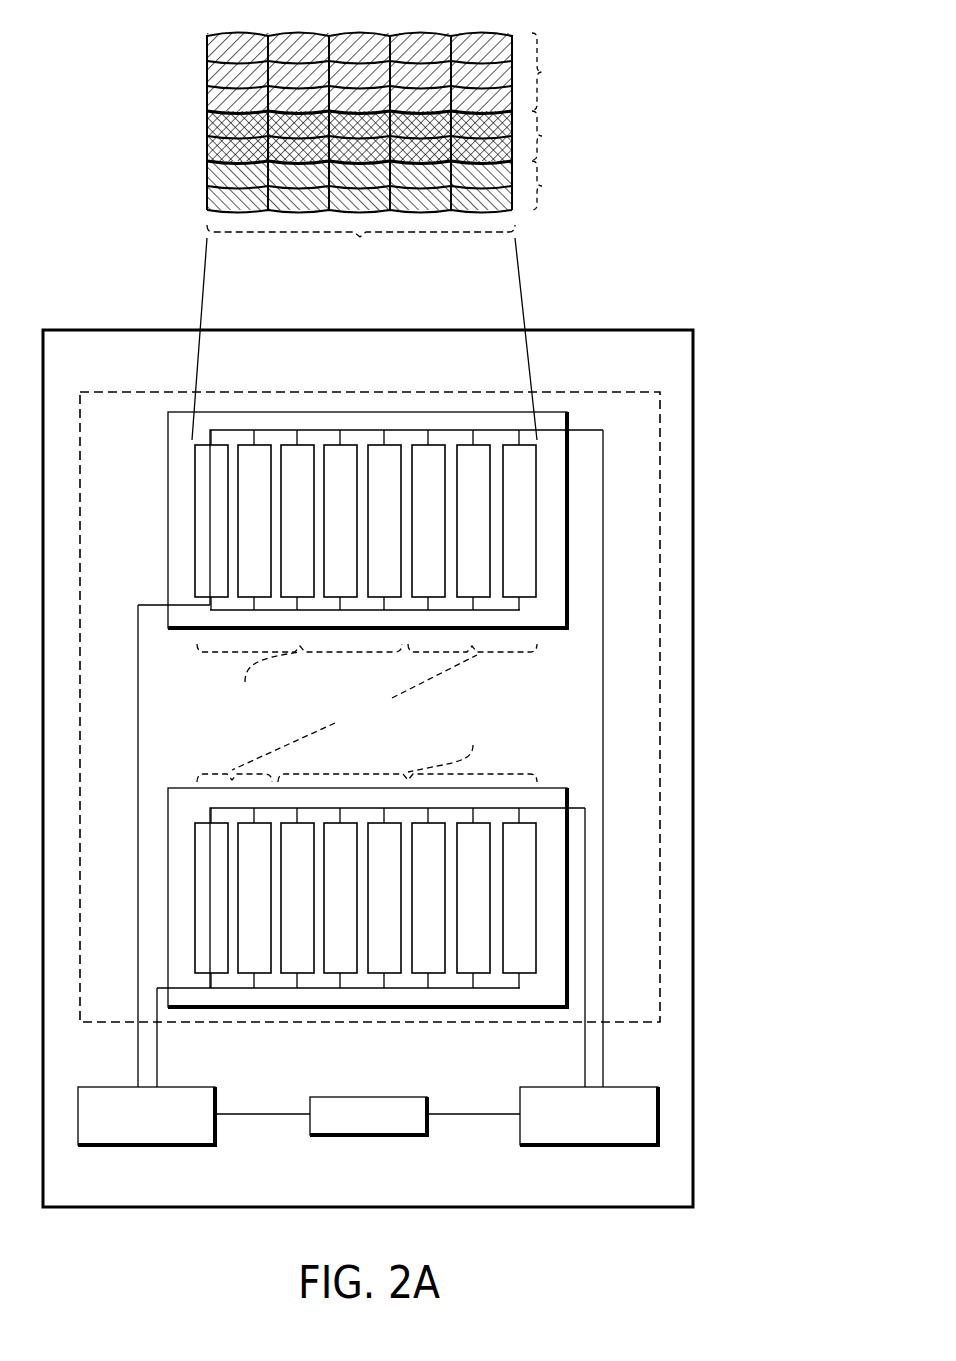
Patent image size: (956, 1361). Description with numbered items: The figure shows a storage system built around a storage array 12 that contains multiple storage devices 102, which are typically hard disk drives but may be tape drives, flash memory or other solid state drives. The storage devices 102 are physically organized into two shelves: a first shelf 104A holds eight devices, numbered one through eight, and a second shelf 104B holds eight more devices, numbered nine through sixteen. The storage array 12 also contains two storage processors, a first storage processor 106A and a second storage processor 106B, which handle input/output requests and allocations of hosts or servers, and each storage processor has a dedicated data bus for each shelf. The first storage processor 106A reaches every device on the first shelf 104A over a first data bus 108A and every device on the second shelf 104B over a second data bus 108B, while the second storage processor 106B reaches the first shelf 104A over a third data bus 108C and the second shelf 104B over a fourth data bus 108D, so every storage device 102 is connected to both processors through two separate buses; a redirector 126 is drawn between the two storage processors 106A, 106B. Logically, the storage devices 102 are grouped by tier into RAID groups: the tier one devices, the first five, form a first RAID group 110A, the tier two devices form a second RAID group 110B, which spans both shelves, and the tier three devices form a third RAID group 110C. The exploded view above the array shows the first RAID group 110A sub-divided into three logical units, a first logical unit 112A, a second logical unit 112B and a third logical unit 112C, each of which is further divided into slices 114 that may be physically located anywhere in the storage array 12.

The storage array 12 is at (82, 330).
The storage devices 102 is at (130, 392).
The Shelf1 104A is at (168, 463).
The Shelf2 104B is at (168, 840).
The storage processor SP1 106A is at (147, 1148).
The storage processor SP2 106B is at (592, 1148).
The first data bus 108A is at (138, 1045).
The second data bus 108B is at (158, 1047).
The third data bus 108C is at (584, 1045).
The fourth data bus 108D is at (604, 1047).
The RAID group RG1 110A is at (197, 656).
The RAID group RG2 110B is at (537, 652).
The RAID group RG3 110C is at (537, 774).
The logical unit LU1 112A is at (206, 75).
The logical unit LU2 112B is at (206, 122).
The logical unit LU3 112C is at (206, 176).
The slices 114 is at (207, 35).
The redirector 126 is at (368, 1096).